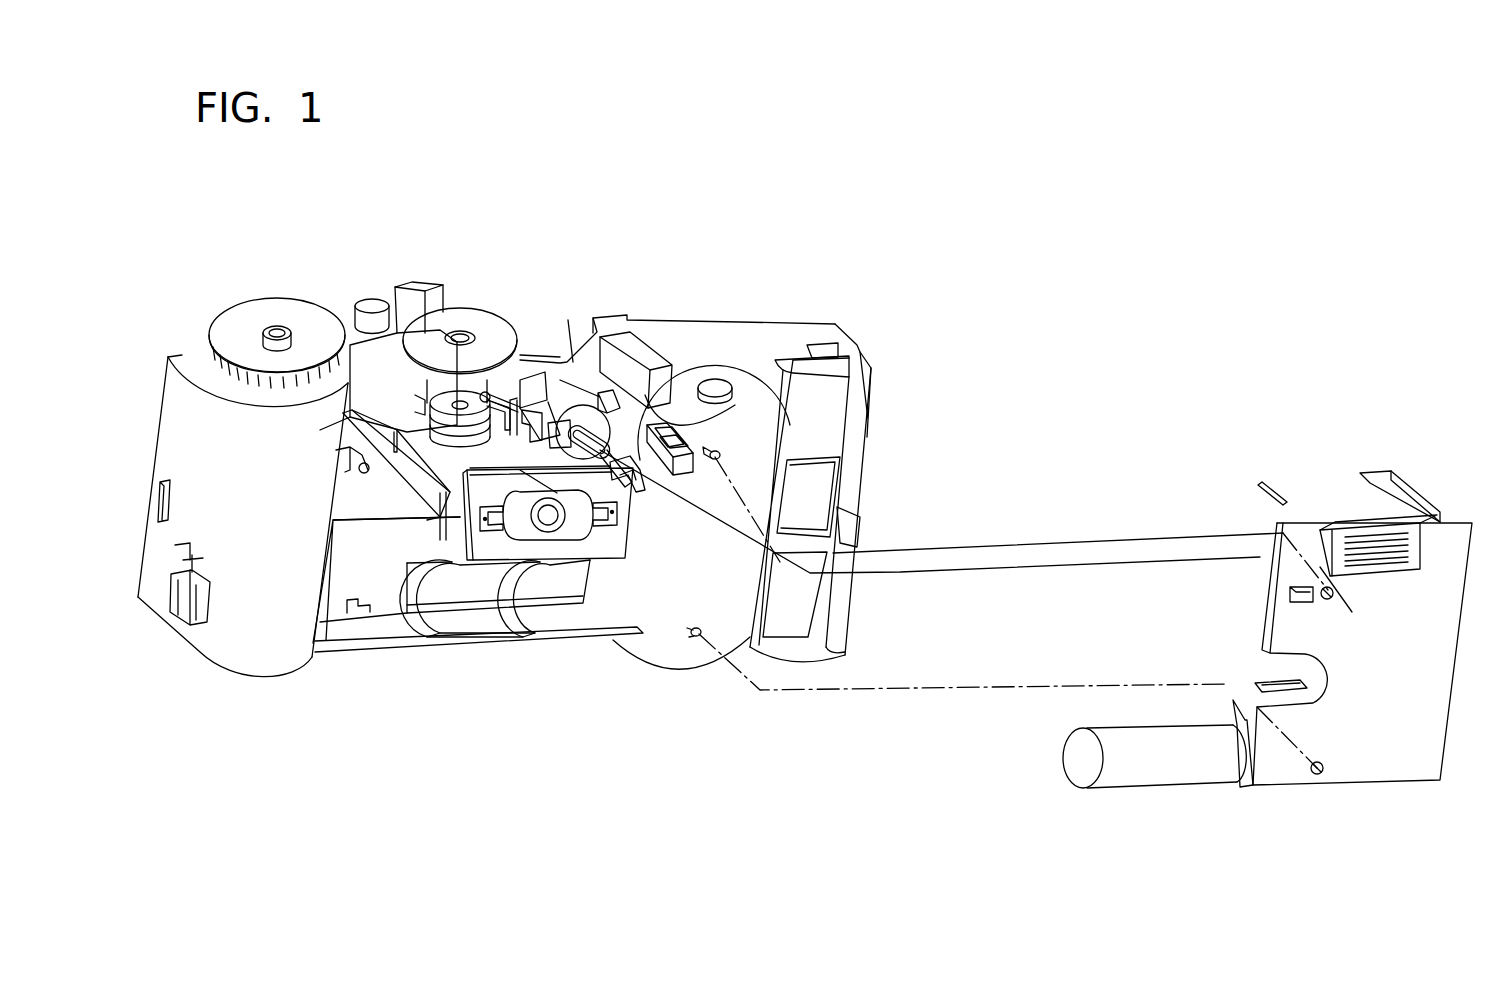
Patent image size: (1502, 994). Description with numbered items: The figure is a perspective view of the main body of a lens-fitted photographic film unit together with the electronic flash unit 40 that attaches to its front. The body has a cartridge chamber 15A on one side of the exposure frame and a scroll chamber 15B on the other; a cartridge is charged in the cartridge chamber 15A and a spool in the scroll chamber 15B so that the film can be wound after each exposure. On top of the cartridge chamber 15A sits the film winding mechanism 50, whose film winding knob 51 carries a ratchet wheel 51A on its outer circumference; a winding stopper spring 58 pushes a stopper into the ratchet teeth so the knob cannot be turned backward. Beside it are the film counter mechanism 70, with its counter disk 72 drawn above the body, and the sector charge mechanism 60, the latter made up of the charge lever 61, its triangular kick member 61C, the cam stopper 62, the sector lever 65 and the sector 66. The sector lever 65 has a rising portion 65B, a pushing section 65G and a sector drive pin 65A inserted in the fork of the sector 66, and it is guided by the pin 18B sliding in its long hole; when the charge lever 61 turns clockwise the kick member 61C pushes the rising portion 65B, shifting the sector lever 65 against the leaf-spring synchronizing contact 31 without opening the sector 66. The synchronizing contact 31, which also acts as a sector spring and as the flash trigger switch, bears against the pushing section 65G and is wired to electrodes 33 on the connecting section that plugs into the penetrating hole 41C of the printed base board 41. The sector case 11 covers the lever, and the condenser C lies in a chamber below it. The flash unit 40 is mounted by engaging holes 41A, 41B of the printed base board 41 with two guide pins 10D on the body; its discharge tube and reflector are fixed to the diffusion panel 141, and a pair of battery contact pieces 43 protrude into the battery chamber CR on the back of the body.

The film winding mechanism 50 is at (283, 268).
The film winding knob 51 is at (240, 312).
The ratchet wheel 51A is at (205, 340).
The cartridge chamber 15A is at (262, 665).
The winding stopper spring 58 is at (352, 380).
The cam stopper 62 is at (397, 427).
The drive disk 72 is at (430, 335).
The film counter mechanism 70 is at (472, 265).
The sector charge mechanism 60 is at (583, 222).
The rising portion 65B is at (543, 398).
The pushing section 65G is at (578, 362).
The kick member 61C is at (573, 418).
The charge lever 61 is at (528, 440).
The synchronizing contact 31 is at (630, 413).
The electrodes 33 is at (705, 420).
The guide pins 10D is at (717, 450).
The pin 18B is at (600, 510).
The sector 66 is at (633, 453).
The sector drive pin 65A is at (612, 462).
The sector case 11 is at (598, 553).
The sector lever 65 is at (585, 472).
The scroll chamber 15B is at (637, 650).
The battery chamber CR is at (797, 603).
The electronic flash unit 40 is at (1485, 520).
The printed base board 41 is at (1432, 720).
The hole 41A is at (1328, 598).
The hole 41B is at (1317, 776).
The penetrating hole 41C is at (1290, 592).
The panel 141 is at (1398, 576).
The battery contact pieces 43 is at (1370, 468).
The condenser C is at (1140, 772).